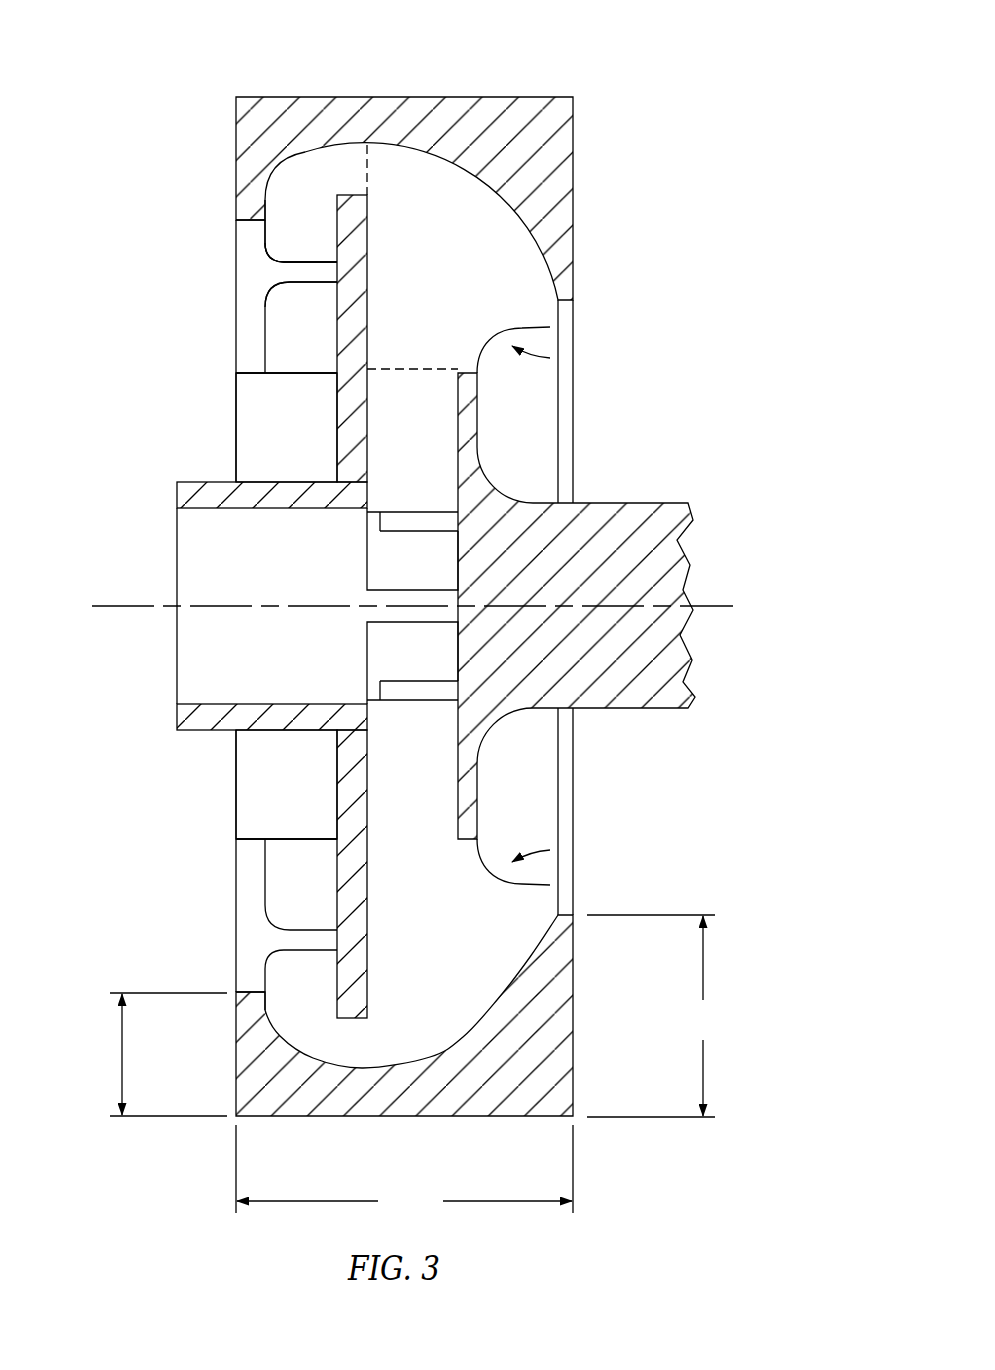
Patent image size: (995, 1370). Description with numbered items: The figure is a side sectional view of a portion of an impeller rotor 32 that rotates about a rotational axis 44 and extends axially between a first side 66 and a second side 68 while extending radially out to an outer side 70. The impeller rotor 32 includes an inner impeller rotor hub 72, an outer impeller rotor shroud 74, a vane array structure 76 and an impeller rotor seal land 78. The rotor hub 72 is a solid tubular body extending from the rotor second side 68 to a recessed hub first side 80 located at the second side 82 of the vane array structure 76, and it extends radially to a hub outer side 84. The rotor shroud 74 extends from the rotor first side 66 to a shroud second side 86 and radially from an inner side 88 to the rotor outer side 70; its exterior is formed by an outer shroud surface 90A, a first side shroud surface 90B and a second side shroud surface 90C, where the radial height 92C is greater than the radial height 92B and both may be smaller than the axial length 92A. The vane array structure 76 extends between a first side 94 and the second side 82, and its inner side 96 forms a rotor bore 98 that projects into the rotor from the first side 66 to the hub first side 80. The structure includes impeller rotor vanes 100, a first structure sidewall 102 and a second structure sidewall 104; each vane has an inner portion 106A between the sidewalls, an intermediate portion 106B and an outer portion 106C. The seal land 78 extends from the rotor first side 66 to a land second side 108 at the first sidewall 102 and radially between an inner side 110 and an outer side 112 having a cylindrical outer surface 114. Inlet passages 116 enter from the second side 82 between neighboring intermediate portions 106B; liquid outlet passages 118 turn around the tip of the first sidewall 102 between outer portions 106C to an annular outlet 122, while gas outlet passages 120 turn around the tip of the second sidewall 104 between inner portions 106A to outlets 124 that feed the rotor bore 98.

The impeller rotor 32 is at (610, 82).
The rotational axis 44 is at (104, 611).
The first side of the impeller rotor 66 is at (177, 495).
The second side of the impeller rotor 68 is at (692, 528).
The outer side of the impeller rotor 70 is at (268, 97).
The inner impeller rotor hub 72 is at (636, 500).
The outer impeller rotor shroud 74 is at (515, 96).
The vane array structure 76 is at (216, 300).
The impeller rotor seal land 78 is at (219, 474).
The first side of the rotor hub 80 is at (455, 487).
The second side of the vane array structure 82 is at (480, 426).
The outer side of the rotor hub 84 is at (677, 503).
The second side of the rotor shroud 86 is at (573, 138).
The inner side of the rotor shroud 88 is at (465, 170).
The outer shroud surface 90A is at (341, 1117).
The first side shroud surface 90B is at (236, 135).
The second side shroud surface 90C is at (573, 1046).
The axial length of the outer shroud surface 92A is at (404, 1170).
The radial height of the first side shroud surface 92B is at (122, 1070).
The radial height of the second side shroud surface 92C is at (654, 1016).
The first side of the vane array structure 94 is at (236, 352).
The inner side of the vane array structure 96 is at (367, 533).
The rotor bore 98 is at (216, 582).
The impeller rotor vanes 100 is at (540, 364).
The axial first structure sidewall 102 is at (332, 233).
The axial second structure sidewall 104 is at (484, 402).
The radial inner portion of the rotor vane 106A is at (426, 427).
The radial intermediate portion of the rotor vane 106B is at (437, 291).
The radial outer portion of the rotor vane 106C is at (327, 210).
The second side of the seal land 108 is at (370, 495).
The inner side of the seal land 110 is at (249, 509).
The outer side of the seal land 112 is at (274, 480).
The outer surface of the seal land 114 is at (286, 606).
The inlet passages 116 is at (528, 305).
The liquid outlet passages 118 is at (332, 158).
The gas outlet passages 120 is at (424, 392).
The outlet 122 is at (216, 397).
The outlet of the gas outlet passage 124 is at (388, 543).